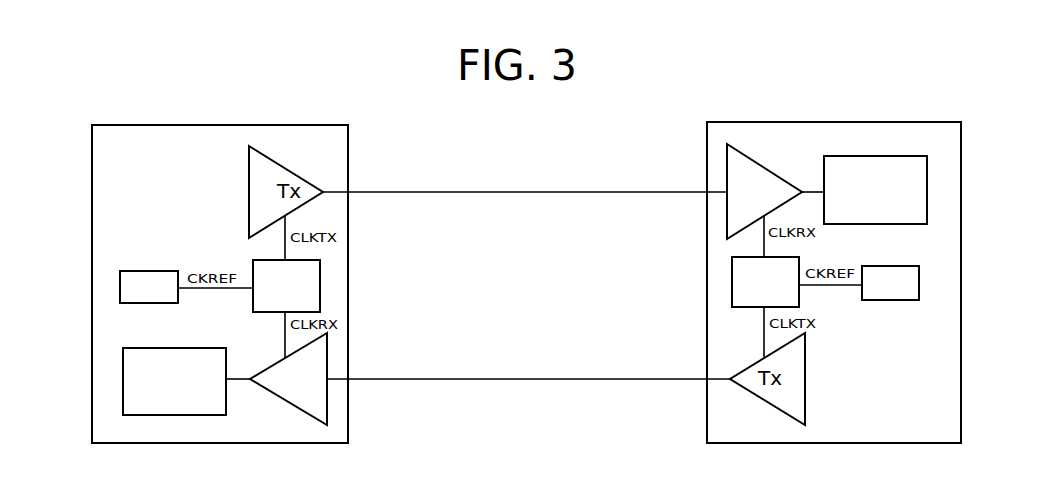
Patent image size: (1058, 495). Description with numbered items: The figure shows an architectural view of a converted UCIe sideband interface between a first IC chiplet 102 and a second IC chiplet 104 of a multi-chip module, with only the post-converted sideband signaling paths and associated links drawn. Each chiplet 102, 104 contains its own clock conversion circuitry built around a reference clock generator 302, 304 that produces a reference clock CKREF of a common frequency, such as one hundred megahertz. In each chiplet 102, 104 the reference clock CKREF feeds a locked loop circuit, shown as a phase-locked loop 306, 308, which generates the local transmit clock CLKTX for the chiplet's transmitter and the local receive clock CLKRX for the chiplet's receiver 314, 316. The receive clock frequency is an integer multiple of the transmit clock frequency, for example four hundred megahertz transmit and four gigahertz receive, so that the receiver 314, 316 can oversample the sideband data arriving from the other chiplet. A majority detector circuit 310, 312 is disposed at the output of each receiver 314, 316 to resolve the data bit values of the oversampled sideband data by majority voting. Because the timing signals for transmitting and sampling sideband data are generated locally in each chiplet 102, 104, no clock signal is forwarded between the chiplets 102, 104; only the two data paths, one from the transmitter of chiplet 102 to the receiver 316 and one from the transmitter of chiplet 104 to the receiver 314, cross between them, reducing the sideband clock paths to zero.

The first IC chiplet 102 is at (92, 160).
The second IC chiplet 104 is at (835, 122).
The reference clock generator 302 is at (148, 271).
The reference clock generator 304 is at (948, 264).
The phase-locked loop 306 is at (320, 283).
The phase-locked loop 308 is at (732, 277).
The majority detector circuit 310 is at (174, 381).
The majority detector circuit 312 is at (875, 190).
The chiplet receiver 314 is at (273, 397).
The chiplet receiver 316 is at (778, 168).